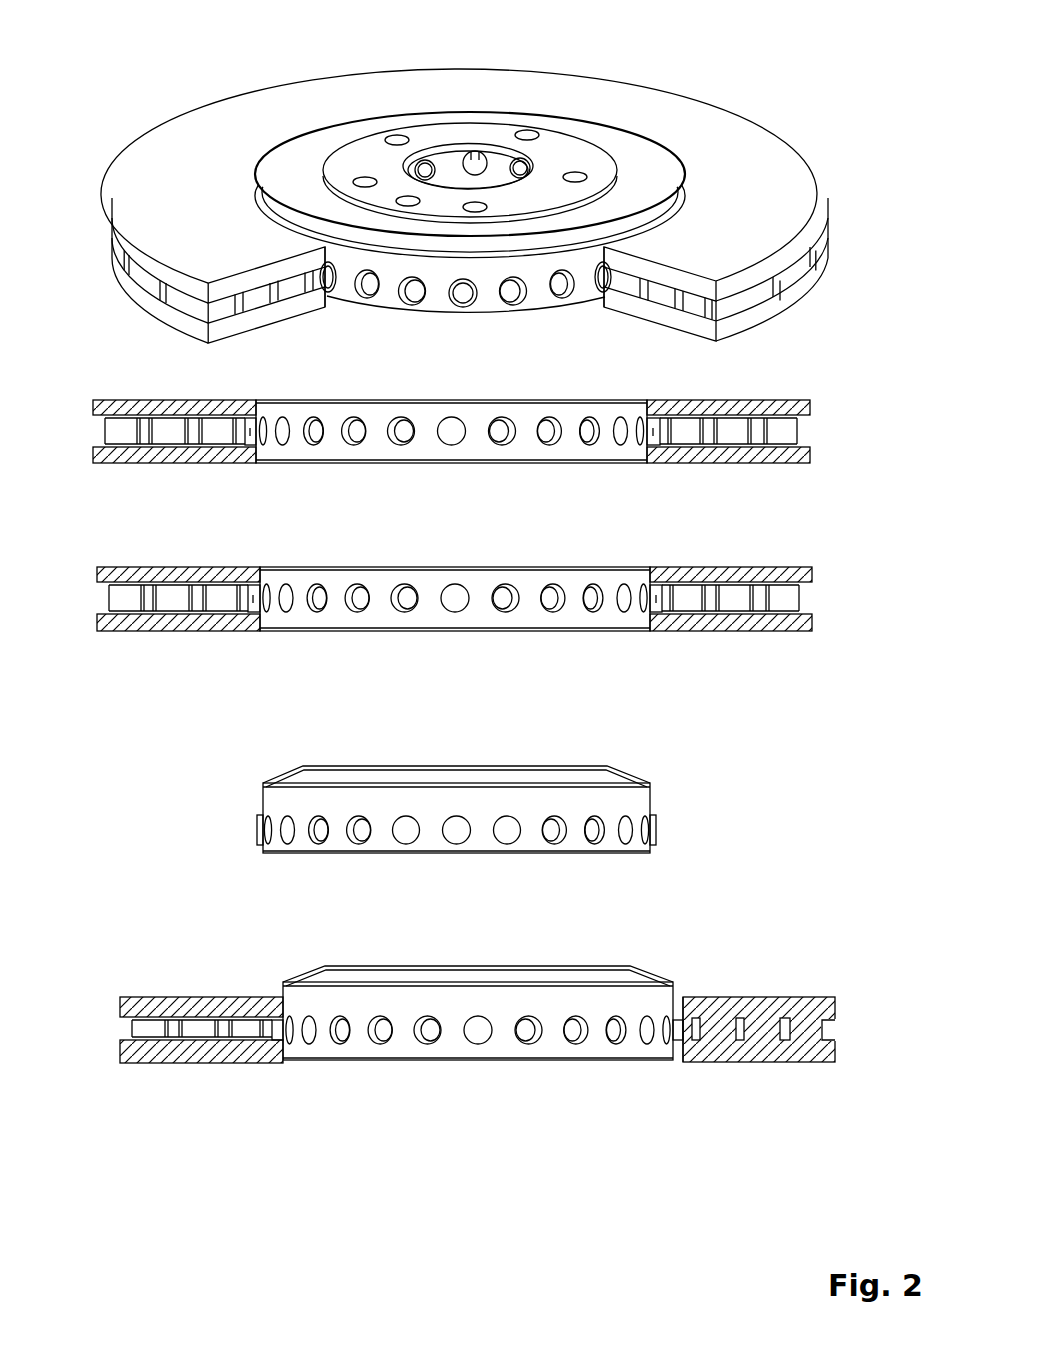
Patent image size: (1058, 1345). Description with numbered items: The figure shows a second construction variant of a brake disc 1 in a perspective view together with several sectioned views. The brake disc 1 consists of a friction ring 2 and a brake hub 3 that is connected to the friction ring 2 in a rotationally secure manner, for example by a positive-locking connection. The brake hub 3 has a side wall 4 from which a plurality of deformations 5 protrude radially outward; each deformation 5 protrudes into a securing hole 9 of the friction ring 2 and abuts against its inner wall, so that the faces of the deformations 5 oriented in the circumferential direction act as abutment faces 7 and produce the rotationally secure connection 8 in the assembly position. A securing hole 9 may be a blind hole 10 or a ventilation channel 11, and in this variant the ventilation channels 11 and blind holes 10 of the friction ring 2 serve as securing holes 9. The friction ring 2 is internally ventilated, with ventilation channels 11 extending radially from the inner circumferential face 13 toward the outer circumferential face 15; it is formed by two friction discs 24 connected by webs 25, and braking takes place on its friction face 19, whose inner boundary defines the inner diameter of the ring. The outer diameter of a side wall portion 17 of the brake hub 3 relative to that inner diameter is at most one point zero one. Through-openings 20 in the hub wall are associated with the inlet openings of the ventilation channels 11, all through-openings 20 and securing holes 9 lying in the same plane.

The brake disc 1 is at (782, 100).
The friction ring 2 is at (475, 583).
The brake hub 3 is at (360, 498).
The side wall 4 is at (428, 566).
The deformation 5 is at (535, 293).
The abutment face 7 is at (505, 278).
The rotationally secure connection 8 is at (687, 1003).
The securing hole 9 is at (586, 684).
The blind hole 10 is at (610, 275).
The ventilation channel 11 is at (662, 593).
The circumferential face 13 is at (478, 418).
The outer circumferential face 15 is at (767, 315).
The side wall portion 17 is at (577, 253).
The friction face 19 is at (727, 153).
The through-opening 20 is at (355, 289).
The friction disc 24 is at (140, 190).
The web 25 is at (117, 430).